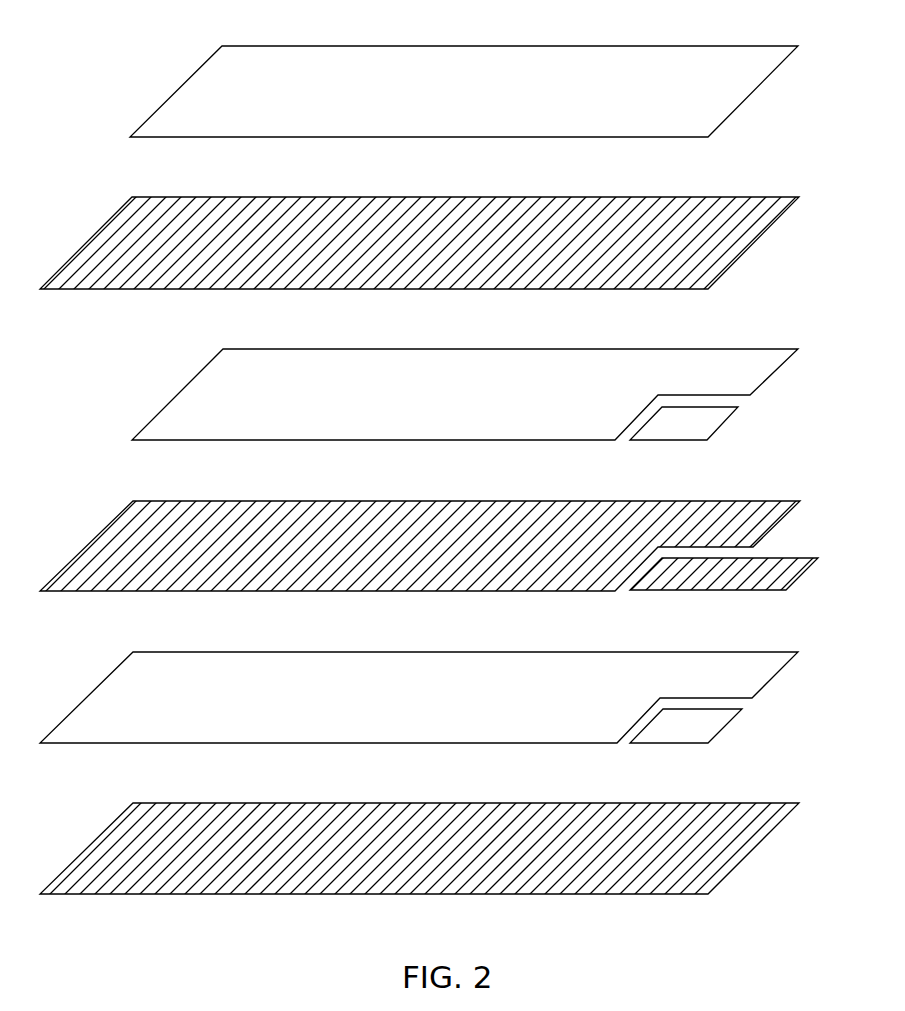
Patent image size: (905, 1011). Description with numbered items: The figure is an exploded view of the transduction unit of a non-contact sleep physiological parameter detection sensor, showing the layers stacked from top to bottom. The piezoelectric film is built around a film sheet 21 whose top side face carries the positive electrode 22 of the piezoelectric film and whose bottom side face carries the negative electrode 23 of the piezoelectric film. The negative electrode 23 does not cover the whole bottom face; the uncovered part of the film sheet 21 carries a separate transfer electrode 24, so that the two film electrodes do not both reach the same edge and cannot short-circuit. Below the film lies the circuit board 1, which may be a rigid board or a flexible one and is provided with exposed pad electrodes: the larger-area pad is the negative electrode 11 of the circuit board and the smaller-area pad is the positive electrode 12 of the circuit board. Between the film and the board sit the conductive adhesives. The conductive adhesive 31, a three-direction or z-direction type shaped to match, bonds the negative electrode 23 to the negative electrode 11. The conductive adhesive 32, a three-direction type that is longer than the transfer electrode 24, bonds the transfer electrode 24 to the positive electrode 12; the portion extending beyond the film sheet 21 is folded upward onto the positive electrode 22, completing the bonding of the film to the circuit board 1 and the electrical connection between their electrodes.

The circuit board 1 is at (92, 883).
The negative electrode of the circuit board 11 is at (110, 725).
The positive electrode of the circuit board 12 is at (700, 725).
The film sheet 21 is at (113, 240).
The positive electrode of the piezoelectric film 22 is at (210, 97).
The negative electrode of the piezoelectric film 23 is at (175, 423).
The transfer electrode 24 is at (700, 424).
The conductive adhesive 31 is at (88, 567).
The conductive adhesive 32 is at (800, 553).